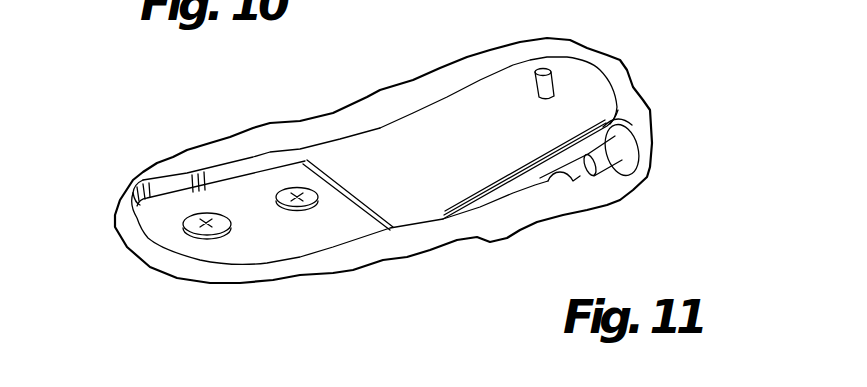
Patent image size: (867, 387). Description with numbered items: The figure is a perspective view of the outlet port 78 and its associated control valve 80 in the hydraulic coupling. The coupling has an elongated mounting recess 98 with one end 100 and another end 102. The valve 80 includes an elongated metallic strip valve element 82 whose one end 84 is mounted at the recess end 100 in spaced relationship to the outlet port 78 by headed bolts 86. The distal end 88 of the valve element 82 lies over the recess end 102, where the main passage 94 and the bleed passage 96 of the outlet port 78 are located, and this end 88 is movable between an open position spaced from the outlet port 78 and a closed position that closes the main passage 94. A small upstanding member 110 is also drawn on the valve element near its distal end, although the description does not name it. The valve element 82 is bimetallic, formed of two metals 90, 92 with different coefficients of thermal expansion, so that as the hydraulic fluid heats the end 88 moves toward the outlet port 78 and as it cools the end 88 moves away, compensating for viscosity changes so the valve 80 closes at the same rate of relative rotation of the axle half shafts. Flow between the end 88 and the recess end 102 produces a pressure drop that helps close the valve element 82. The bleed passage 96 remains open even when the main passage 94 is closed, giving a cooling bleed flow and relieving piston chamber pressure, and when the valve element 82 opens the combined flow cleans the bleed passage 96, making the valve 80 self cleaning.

The outlet port 78 is at (598, 165).
The valve 80 is at (645, 57).
The valve element 82 is at (372, 178).
The one end of valve element 84 is at (247, 195).
The headed bolts 86 is at (197, 212).
The distal end of valve element 88 is at (585, 62).
The metal 90 is at (468, 195).
The metal 92 is at (490, 190).
The main passage 94 is at (580, 176).
The bleed passage 96 is at (625, 130).
The mounting recess 98 is at (325, 143).
The one end of recess 100 is at (150, 187).
The other end of recess 102 is at (638, 140).
The post 110 is at (535, 70).